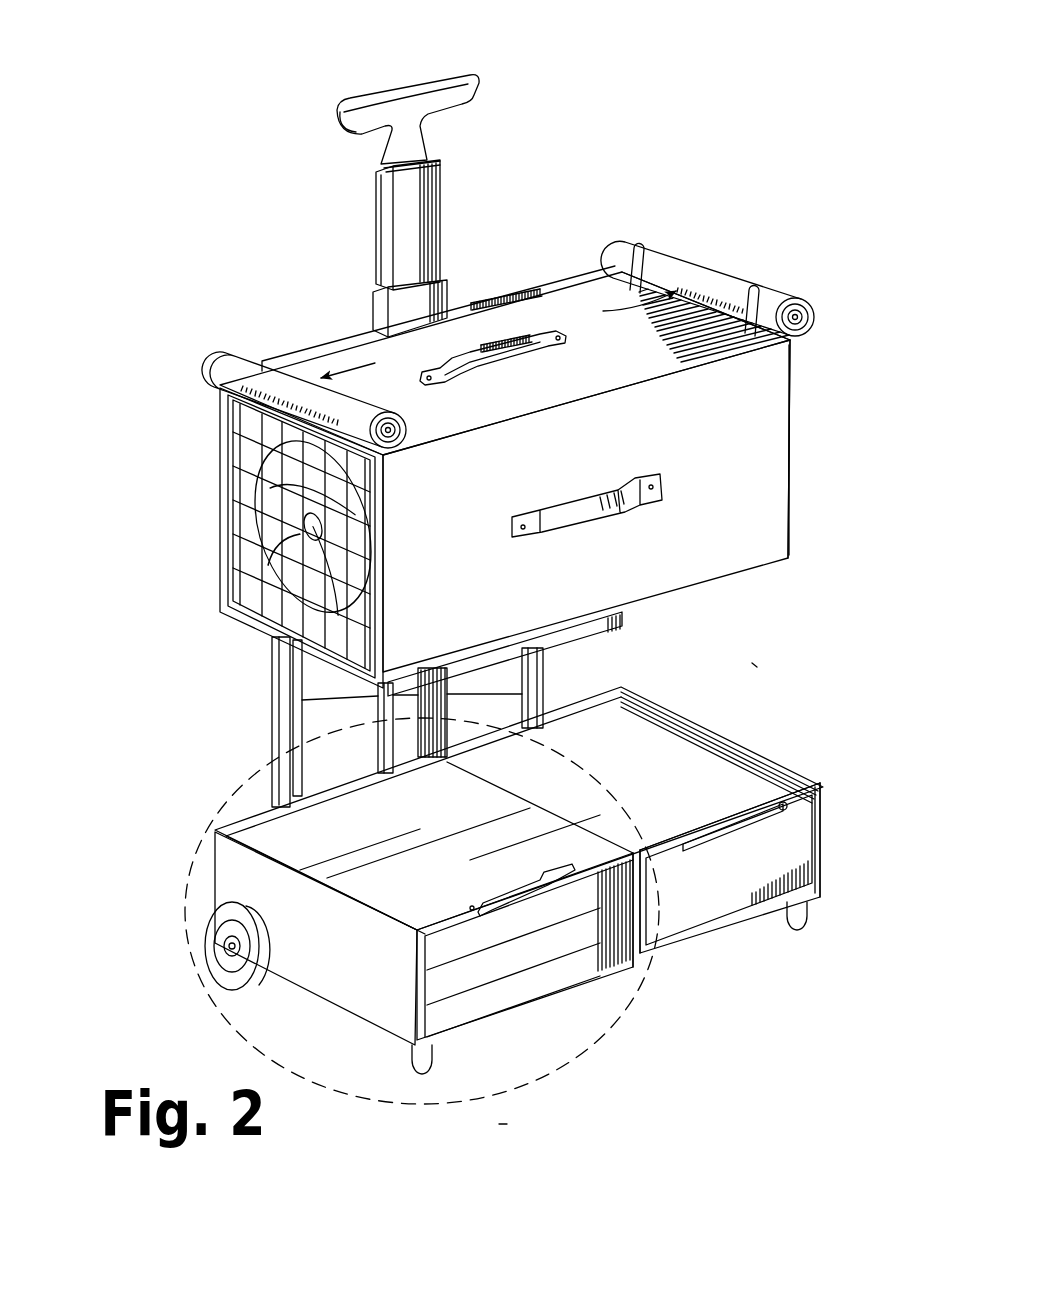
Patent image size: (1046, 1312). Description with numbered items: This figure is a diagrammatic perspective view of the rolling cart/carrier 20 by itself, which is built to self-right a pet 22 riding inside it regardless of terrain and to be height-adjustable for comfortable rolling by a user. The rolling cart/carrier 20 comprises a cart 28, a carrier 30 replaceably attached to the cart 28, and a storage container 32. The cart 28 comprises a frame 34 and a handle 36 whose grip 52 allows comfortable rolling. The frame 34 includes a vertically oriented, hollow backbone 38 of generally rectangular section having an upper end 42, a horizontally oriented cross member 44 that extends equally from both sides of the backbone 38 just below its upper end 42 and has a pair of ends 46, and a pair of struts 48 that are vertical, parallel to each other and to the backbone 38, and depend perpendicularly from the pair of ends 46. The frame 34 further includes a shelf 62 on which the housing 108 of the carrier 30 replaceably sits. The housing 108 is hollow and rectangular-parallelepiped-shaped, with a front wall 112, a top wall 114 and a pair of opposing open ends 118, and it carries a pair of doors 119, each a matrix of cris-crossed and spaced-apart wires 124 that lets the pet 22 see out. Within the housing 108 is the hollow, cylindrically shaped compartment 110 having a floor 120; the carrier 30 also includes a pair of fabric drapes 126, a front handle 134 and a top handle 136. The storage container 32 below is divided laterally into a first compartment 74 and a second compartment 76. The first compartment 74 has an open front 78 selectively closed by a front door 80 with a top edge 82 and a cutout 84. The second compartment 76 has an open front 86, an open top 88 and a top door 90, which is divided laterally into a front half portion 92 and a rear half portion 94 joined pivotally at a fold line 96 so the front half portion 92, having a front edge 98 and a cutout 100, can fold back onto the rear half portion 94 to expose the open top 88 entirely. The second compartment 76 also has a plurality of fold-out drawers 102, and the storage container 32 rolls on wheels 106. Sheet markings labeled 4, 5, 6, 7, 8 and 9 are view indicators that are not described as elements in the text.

The rolling cart/carrier 20 is at (168, 172).
The upper fan unit 6 is at (252, 255).
The handle assembly 8 is at (500, 254).
The cart 28 is at (402, 86).
The grip 52 is at (441, 80).
The handle 36 is at (351, 101).
The upper end 42 is at (410, 278).
The backbone 38 is at (383, 312).
The upper housing 7 is at (818, 426).
The top wall 114 is at (627, 342).
The front wall 112 is at (738, 530).
The pair of opposing open ends 118 is at (791, 452).
The storage container 32 is at (795, 500).
The cross member 44 is at (332, 340).
The pair of ends 46 is at (528, 292).
The housing 108 is at (800, 355).
The carrier 30 is at (606, 266).
The pair of fabric drapes 126 is at (498, 334).
The top handle 136 is at (508, 358).
The front handle 134 is at (617, 531).
The shelf 62 is at (622, 620).
The pet 22 is at (253, 513).
The compartment 110 is at (270, 536).
The matrix of cris-crossed and spaced-apart wires 124 is at (296, 492).
The pair of doors 119 is at (322, 507).
The floor 120 is at (330, 534).
The frame 34 is at (268, 683).
The pair of struts 48 is at (297, 732).
The section indicator 5 is at (760, 669).
The section indicator 9 is at (503, 1130).
The base unit 4 is at (214, 800).
The rear half portion 94 is at (280, 838).
The first compartment 74 is at (779, 754).
The top door 90 is at (453, 792).
The fold line 96 is at (453, 831).
The open top 88 is at (285, 856).
The front half portion 92 is at (527, 848).
The open front 78 is at (777, 804).
The cutout 84 is at (760, 828).
The second compartment 76 is at (376, 1035).
The wheels 106 is at (218, 944).
The plurality of fold-out drawers 102 is at (426, 966).
The cutout 100 is at (535, 886).
The open front 86 is at (481, 906).
The front edge 98 is at (647, 840).
The front door 80 is at (718, 878).
The top edge 82 is at (686, 850).